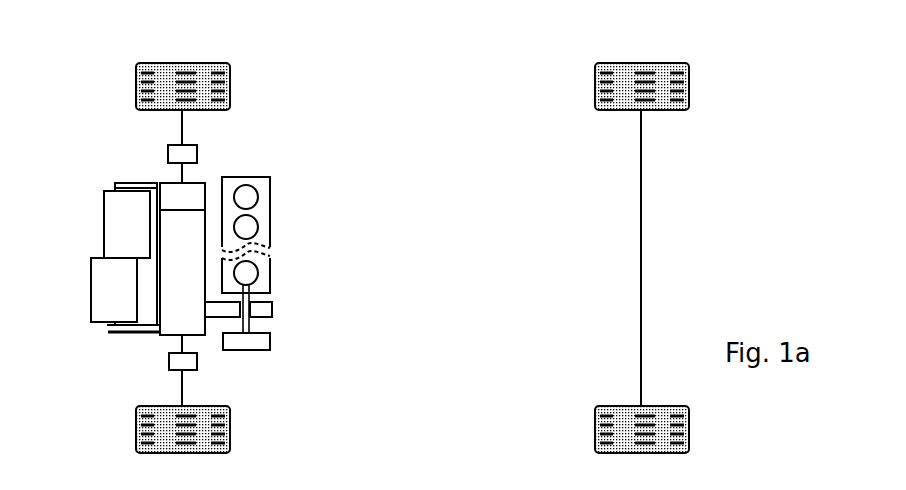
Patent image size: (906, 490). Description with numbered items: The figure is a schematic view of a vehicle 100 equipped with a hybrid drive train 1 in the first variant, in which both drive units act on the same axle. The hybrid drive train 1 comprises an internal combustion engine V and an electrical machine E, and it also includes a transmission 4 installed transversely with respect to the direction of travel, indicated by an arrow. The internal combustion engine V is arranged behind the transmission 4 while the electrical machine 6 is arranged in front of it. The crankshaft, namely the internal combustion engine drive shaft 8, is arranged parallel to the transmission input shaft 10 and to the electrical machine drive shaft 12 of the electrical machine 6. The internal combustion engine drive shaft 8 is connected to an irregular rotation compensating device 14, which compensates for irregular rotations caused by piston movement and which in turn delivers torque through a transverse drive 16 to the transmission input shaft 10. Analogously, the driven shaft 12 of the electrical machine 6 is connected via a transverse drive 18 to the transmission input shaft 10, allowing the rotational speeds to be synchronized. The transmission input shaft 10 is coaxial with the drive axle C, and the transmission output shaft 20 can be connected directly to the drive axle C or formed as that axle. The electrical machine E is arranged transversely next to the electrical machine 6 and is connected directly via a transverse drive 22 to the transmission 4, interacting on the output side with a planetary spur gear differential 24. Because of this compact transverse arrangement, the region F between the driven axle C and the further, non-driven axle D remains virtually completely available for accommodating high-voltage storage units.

The vehicle 100 is at (415, 60).
The hybrid drive train 1 is at (113, 350).
The transmission 4 is at (182, 259).
The electrical machine 6 is at (105, 300).
The internal combustion engine drive shaft 8 is at (246, 290).
The transmission input shaft 10 is at (183, 350).
The electrical machine drive shaft 12 is at (107, 325).
The irregular rotation compensating device 14 is at (247, 345).
The transverse drive 16 is at (268, 308).
The transverse drive 18 is at (108, 333).
The transmission output shaft 20 is at (183, 178).
The transverse drive 22 is at (115, 184).
The spur gear differential 24 is at (178, 193).
The drive axle C is at (183, 125).
The further axle D is at (641, 150).
The electrical machine E is at (117, 233).
The region F is at (437, 271).
The internal combustion engine V is at (266, 177).